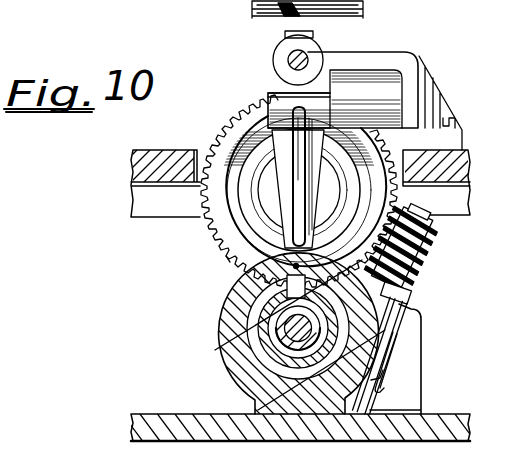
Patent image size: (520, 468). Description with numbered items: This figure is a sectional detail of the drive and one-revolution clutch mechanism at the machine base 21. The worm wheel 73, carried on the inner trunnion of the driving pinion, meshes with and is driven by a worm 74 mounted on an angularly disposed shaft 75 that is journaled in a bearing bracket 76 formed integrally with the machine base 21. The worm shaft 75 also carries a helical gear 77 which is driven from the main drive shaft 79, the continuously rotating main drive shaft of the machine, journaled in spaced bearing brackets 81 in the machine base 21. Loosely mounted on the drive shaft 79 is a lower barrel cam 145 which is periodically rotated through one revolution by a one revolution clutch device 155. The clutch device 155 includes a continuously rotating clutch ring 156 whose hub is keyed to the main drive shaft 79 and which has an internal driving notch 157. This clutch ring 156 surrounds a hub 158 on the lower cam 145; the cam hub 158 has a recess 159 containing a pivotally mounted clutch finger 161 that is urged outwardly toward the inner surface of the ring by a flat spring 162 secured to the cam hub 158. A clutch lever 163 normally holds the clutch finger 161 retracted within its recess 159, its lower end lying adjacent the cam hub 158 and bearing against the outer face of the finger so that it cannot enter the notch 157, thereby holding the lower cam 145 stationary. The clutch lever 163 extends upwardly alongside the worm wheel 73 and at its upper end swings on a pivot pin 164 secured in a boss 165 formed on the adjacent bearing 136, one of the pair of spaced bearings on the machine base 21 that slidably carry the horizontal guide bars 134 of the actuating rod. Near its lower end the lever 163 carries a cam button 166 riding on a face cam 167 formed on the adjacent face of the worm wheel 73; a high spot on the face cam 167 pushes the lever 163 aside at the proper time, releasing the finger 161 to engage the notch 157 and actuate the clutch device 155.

The machine base 21 is at (139, 170).
The worm wheel 73 is at (214, 232).
The worm 74 is at (428, 248).
The shaft 75 is at (421, 205).
The bearing bracket 76 is at (406, 343).
The helical gear 77 is at (374, 380).
The main drive shaft 79 is at (258, 338).
The bearing brackets 81 is at (268, 375).
The guide bars 134 is at (296, 58).
The bearings 136 is at (380, 62).
The barrel cam 145 is at (362, 357).
The one revolution clutch device 155 is at (222, 292).
The clutch ring 156 is at (247, 305).
The driving notch 157 is at (262, 397).
The hub 158 is at (248, 350).
The recess 159 is at (345, 325).
The clutch finger 161 is at (246, 329).
The flat spring 162 is at (394, 303).
The clutch lever 163 is at (290, 198).
The pivot pin 164 is at (262, 108).
The boss 165 is at (396, 103).
The cam button 166 is at (232, 270).
The face cam 167 is at (242, 148).